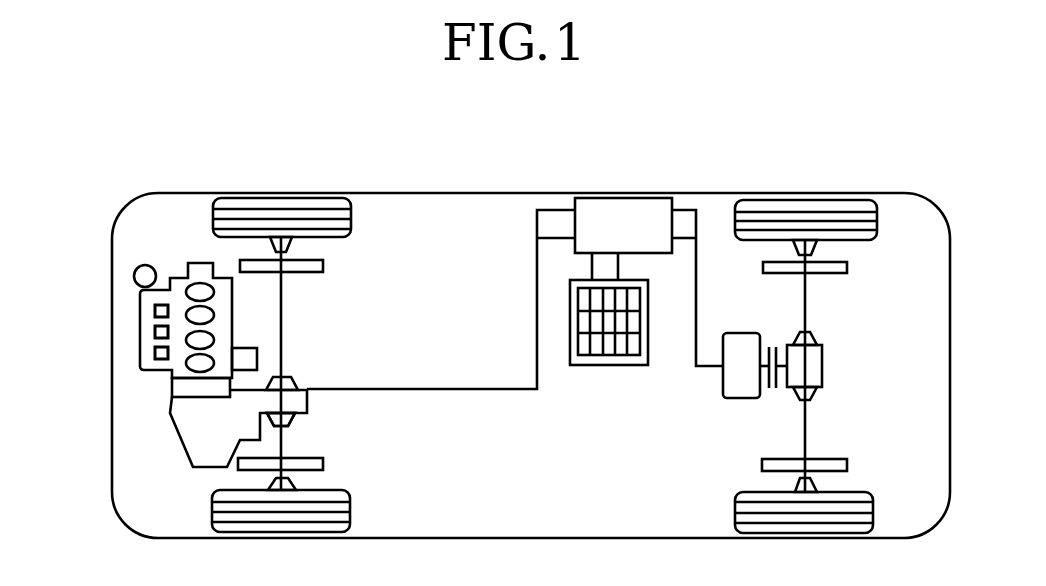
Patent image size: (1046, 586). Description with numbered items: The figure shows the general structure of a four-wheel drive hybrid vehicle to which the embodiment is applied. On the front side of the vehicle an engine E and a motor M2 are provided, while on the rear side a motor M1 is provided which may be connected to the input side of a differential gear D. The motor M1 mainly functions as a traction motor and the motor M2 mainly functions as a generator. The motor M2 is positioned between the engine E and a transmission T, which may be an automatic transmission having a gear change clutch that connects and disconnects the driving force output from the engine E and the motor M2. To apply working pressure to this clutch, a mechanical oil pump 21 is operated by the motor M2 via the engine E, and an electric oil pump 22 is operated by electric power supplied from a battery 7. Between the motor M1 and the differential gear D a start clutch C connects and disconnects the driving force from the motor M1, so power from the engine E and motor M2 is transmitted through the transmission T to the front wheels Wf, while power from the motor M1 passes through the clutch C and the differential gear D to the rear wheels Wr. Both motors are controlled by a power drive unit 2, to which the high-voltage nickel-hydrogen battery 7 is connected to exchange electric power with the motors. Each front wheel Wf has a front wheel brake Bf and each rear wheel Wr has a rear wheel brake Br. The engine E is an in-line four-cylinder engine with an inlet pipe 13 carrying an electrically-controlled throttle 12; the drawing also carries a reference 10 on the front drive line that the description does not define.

The power drive unit 2 is at (575, 198).
The battery 7 is at (602, 365).
The front drive shaft 10 is at (282, 360).
The throttle 12 is at (134, 275).
The inlet pipe 13 is at (140, 318).
The mechanical oil pump 21 is at (262, 437).
The electric oil pump 22 is at (250, 347).
The engine E is at (233, 328).
The transmission T is at (180, 440).
The motor M1 is at (742, 333).
The motor M2 is at (172, 387).
The start clutch C is at (772, 347).
The differential gear D is at (822, 366).
The front wheels Wf is at (351, 213).
The rear wheels Wr is at (736, 216).
The front wheel brake Bf is at (323, 265).
The rear wheel brake Br is at (847, 266).